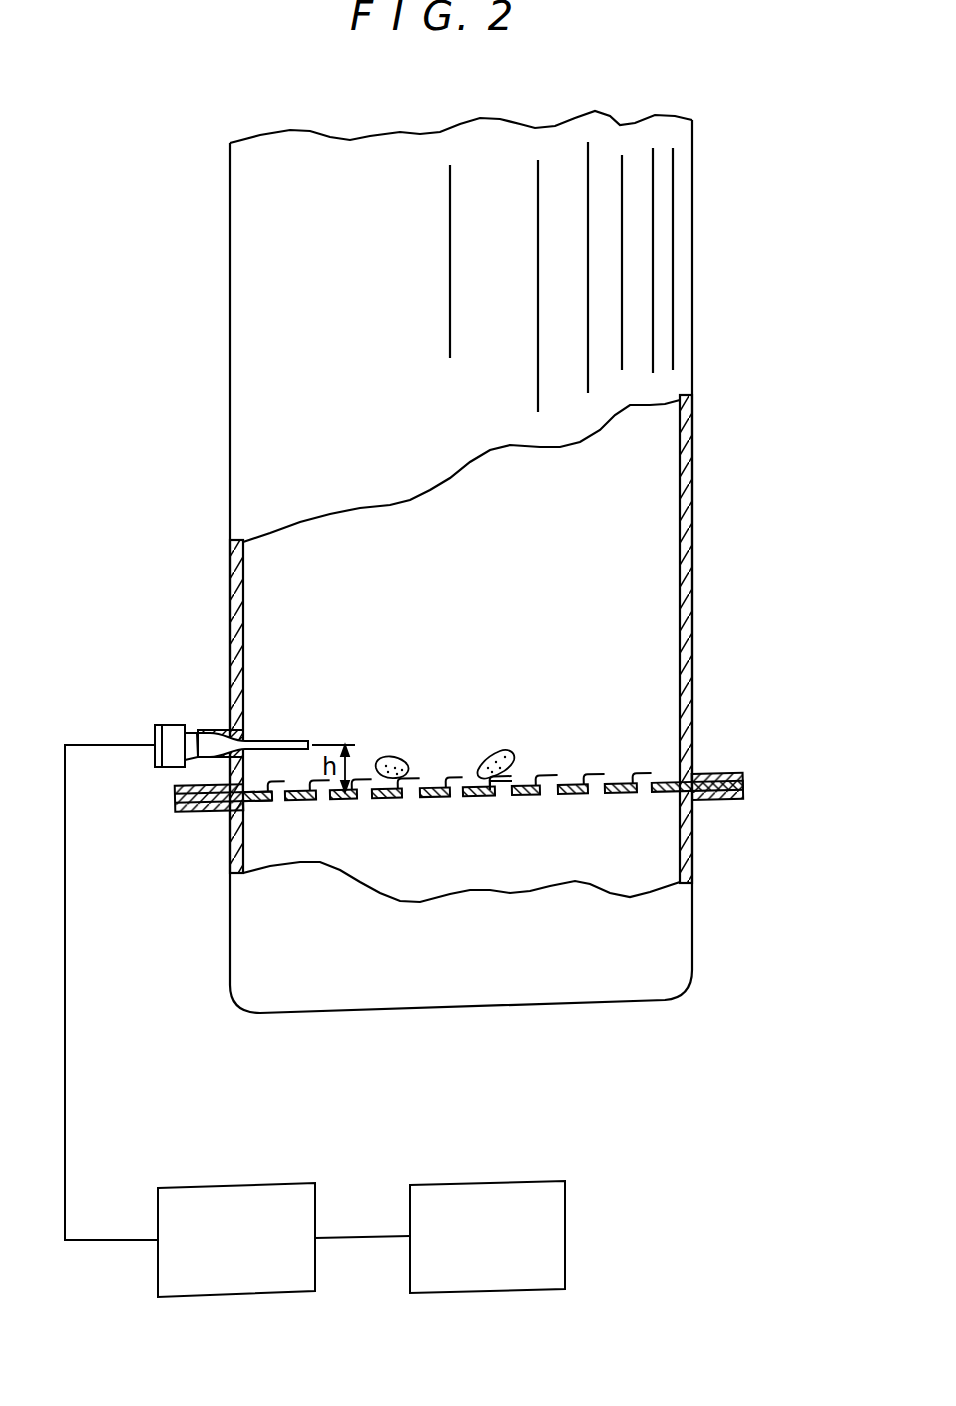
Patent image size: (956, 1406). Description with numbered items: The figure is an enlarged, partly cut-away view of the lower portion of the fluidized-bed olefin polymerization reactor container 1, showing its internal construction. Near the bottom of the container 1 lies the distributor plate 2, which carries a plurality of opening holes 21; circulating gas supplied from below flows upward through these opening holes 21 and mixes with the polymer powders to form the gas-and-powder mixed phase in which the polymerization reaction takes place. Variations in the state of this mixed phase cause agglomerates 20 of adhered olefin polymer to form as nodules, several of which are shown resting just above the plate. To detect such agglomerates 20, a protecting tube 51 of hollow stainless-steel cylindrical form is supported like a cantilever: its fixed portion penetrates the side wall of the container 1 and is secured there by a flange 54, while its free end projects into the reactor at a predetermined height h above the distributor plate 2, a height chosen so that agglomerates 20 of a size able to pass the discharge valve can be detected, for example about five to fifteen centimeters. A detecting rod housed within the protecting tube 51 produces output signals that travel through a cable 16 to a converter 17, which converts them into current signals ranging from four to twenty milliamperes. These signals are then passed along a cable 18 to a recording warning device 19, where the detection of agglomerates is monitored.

The fluidized-bed olefin polymerization reactor container 1 is at (243, 304).
The distributor plate 2 is at (580, 794).
The agglomerates 20 is at (398, 760).
The opening holes 21 is at (505, 796).
The protecting tube 51 is at (278, 737).
The flange 54 is at (150, 725).
The cable 16 is at (65, 1038).
The converter 17 is at (240, 1186).
The cable 18 is at (355, 1237).
The recording warning device 19 is at (494, 1185).